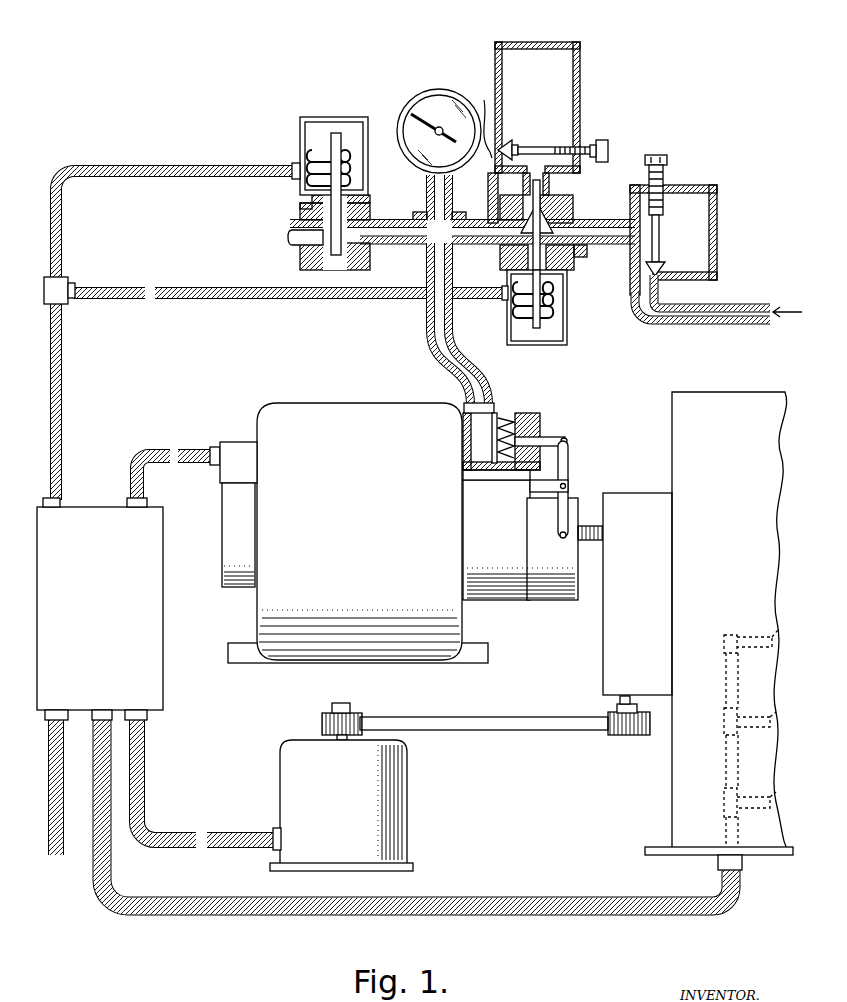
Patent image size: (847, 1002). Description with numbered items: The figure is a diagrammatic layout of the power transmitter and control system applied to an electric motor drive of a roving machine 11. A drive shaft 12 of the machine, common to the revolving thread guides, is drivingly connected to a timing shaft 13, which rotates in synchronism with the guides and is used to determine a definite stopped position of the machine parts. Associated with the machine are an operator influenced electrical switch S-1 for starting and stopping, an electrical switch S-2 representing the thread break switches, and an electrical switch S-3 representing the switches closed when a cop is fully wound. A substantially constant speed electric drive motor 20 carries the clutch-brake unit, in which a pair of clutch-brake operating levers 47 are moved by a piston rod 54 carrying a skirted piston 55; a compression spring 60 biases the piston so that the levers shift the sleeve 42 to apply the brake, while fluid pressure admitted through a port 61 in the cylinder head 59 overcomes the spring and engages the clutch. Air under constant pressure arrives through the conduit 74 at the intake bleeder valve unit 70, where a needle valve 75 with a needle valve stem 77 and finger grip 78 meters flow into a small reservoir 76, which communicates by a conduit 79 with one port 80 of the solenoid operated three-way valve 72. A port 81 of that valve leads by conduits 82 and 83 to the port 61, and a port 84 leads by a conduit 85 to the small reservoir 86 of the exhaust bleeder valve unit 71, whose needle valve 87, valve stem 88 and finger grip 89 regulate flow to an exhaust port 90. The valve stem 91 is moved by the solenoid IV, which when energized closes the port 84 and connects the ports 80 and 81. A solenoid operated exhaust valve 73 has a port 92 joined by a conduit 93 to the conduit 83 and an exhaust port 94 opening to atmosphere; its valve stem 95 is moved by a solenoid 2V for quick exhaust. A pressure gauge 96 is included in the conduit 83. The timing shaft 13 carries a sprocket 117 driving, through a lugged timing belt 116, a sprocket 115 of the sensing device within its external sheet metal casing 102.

The small reservoir 86 is at (530, 62).
The exhaust bleeder valve unit 71 is at (580, 72).
The pressure gauge 96 is at (415, 100).
The exhaust port 90 is at (478, 117).
The needle valve 87 is at (508, 142).
The valve stem 88 is at (538, 147).
The finger grip 89 is at (600, 140).
The finger grip 78 is at (657, 155).
The intake bleeder valve unit 70 is at (694, 185).
The small reservoir 76 is at (698, 197).
The needle valve stem 77 is at (659, 233).
The needle valve 75 is at (664, 264).
The conduit 79 is at (600, 232).
The conduit 74 is at (718, 322).
The solenoid 2V is at (320, 148).
The valve stem 95 is at (300, 203).
The solenoid operated exhaust valve 73 is at (300, 208).
The exhaust port 94 is at (305, 240).
The port 92 is at (383, 241).
The conduit 93 is at (398, 220).
The conduit 82 is at (485, 222).
The port 84 is at (502, 216).
The conduit 85 is at (549, 184).
The port 81 is at (500, 247).
The valve stem 91 is at (530, 268).
The port 80 is at (585, 244).
The solenoid operated three-way valve 72 is at (575, 262).
The conduit 83 is at (427, 340).
The solenoid IV is at (528, 320).
The port 61 is at (470, 403).
The skirted piston 55 is at (507, 415).
The compression spring 60 is at (527, 415).
The piston rod 54 is at (548, 441).
The clutch-brake operating levers 47 is at (569, 463).
The cylinder head 59 is at (482, 472).
The electric drive motor 20 is at (356, 543).
The drive shaft 12 is at (600, 530).
The roving machine 11 is at (709, 553).
The sleeve 42 is at (553, 565).
The electrical switch S-3 is at (762, 637).
The electrical switch S-2 is at (762, 717).
The operator influenced electrical switch S-1 is at (762, 797).
The timing shaft 13 is at (622, 696).
The sprocket 115 is at (352, 712).
The lugged timing belt 116 is at (490, 729).
The sprocket 117 is at (622, 736).
The external sheet metal casing 102 is at (290, 787).